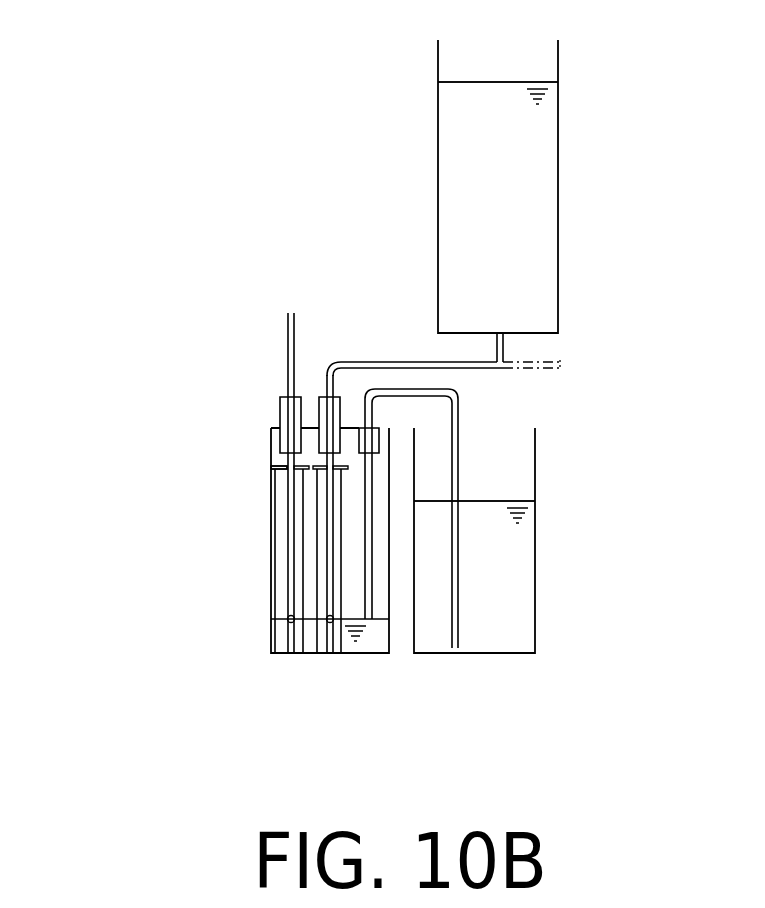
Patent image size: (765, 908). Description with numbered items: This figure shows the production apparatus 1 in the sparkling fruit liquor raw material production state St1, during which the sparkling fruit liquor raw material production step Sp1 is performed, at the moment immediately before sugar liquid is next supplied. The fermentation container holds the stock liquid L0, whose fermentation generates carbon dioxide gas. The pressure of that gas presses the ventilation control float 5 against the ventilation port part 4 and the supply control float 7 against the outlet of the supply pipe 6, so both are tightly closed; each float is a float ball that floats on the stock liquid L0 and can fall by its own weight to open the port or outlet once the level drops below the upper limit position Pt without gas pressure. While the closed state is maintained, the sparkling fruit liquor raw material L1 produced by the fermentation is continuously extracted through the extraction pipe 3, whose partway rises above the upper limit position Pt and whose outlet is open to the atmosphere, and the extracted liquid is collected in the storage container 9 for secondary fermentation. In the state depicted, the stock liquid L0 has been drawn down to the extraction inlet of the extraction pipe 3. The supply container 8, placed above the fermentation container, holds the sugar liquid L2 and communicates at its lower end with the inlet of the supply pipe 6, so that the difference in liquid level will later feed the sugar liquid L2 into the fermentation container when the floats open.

The production apparatus 1 is at (332, 102).
The extraction pipe 3 is at (458, 418).
The ventilation port part 4 is at (287, 363).
The ventilation control float 5 is at (288, 471).
The supply pipe 6 is at (388, 362).
The supply control float 7 is at (327, 471).
The supply container 8 is at (558, 63).
The storage container 9 is at (535, 518).
The upper limit position Pt is at (262, 469).
The stock liquid L0 is at (350, 645).
The sparkling fruit liquor raw material L1 is at (500, 645).
The sugar liquid L2 is at (548, 185).
The sparkling fruit liquor raw material production state St1 is at (193, 361).
The sparkling fruit liquor raw material production step Sp1 is at (193, 402).